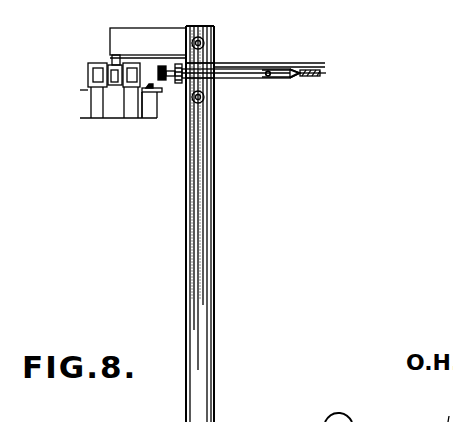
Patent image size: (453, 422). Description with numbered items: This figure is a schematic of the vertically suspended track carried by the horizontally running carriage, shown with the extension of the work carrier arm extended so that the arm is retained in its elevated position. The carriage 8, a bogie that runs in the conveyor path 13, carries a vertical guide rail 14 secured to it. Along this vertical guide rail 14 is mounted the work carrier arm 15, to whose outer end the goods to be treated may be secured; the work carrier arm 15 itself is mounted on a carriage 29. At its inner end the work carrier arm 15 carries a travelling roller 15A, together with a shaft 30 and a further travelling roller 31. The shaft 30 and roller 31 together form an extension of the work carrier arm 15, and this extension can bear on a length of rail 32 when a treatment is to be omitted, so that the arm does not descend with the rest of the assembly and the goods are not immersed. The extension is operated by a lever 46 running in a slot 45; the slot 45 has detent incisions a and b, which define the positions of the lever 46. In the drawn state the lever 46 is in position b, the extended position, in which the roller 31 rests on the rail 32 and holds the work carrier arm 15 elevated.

The carriage 8 is at (173, 40).
The conveyor path 13 is at (89, 63).
The vertical guide rail 14 is at (199, 238).
The work carrier arm 15 is at (225, 67).
The travelling roller 15A is at (205, 63).
The carriage 29 is at (206, 80).
The shaft 30 is at (168, 86).
The further travelling roller 31 is at (158, 58).
The rail 32 is at (150, 95).
The slot 45 is at (277, 70).
The lever 46 is at (272, 77).
The detent incision a is at (309, 57).
The detent incision b is at (267, 69).